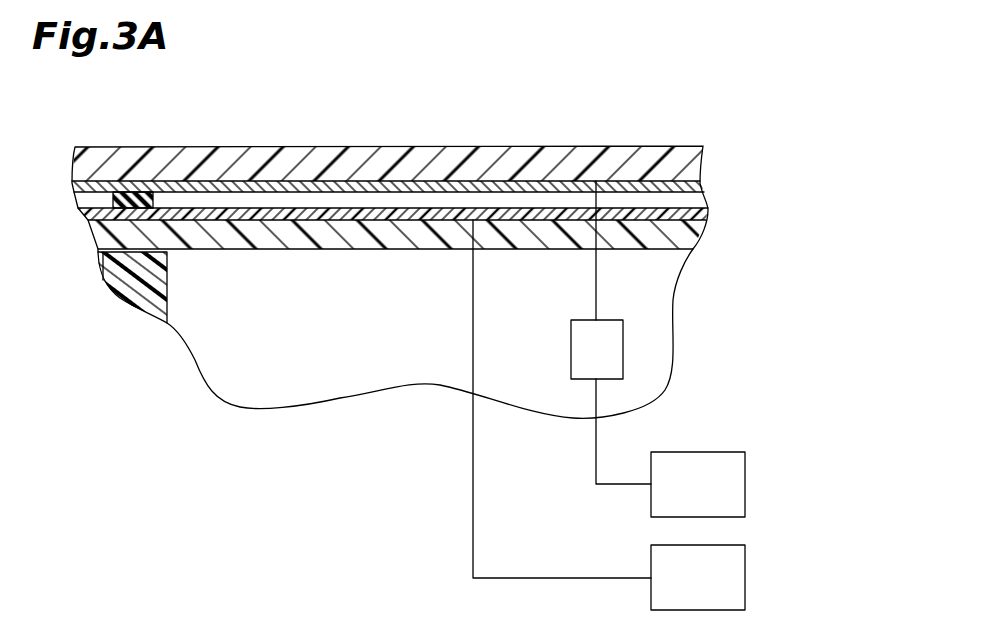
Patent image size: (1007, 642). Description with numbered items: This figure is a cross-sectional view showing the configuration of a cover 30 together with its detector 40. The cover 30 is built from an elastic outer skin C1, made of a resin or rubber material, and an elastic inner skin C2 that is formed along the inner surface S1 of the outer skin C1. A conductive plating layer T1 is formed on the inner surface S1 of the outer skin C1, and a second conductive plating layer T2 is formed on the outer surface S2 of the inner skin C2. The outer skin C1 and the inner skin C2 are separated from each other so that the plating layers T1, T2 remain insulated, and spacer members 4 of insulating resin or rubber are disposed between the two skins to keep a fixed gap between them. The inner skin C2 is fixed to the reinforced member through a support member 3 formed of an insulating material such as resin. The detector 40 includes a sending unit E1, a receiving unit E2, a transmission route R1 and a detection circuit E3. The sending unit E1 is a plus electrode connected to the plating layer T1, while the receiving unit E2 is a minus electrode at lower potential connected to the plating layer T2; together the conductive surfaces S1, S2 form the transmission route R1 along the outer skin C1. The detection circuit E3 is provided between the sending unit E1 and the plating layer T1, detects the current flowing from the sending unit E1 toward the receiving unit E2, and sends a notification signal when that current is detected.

The support member 3 is at (133, 295).
The spacer member 4 is at (117, 147).
The cover 30 is at (390, 229).
The detector 40 is at (668, 395).
The outer skin C1 is at (320, 165).
The inner skin C2 is at (425, 235).
The conductive plating layer T1 is at (176, 185).
The conductive plating layer T2 is at (217, 208).
The inner surface S1 is at (498, 192).
The outer surface S2 is at (538, 207).
The transmission route R1 is at (637, 212).
The sending unit E1 is at (745, 465).
The receiving unit E2 is at (826, 340).
The detection circuit E3 is at (623, 350).